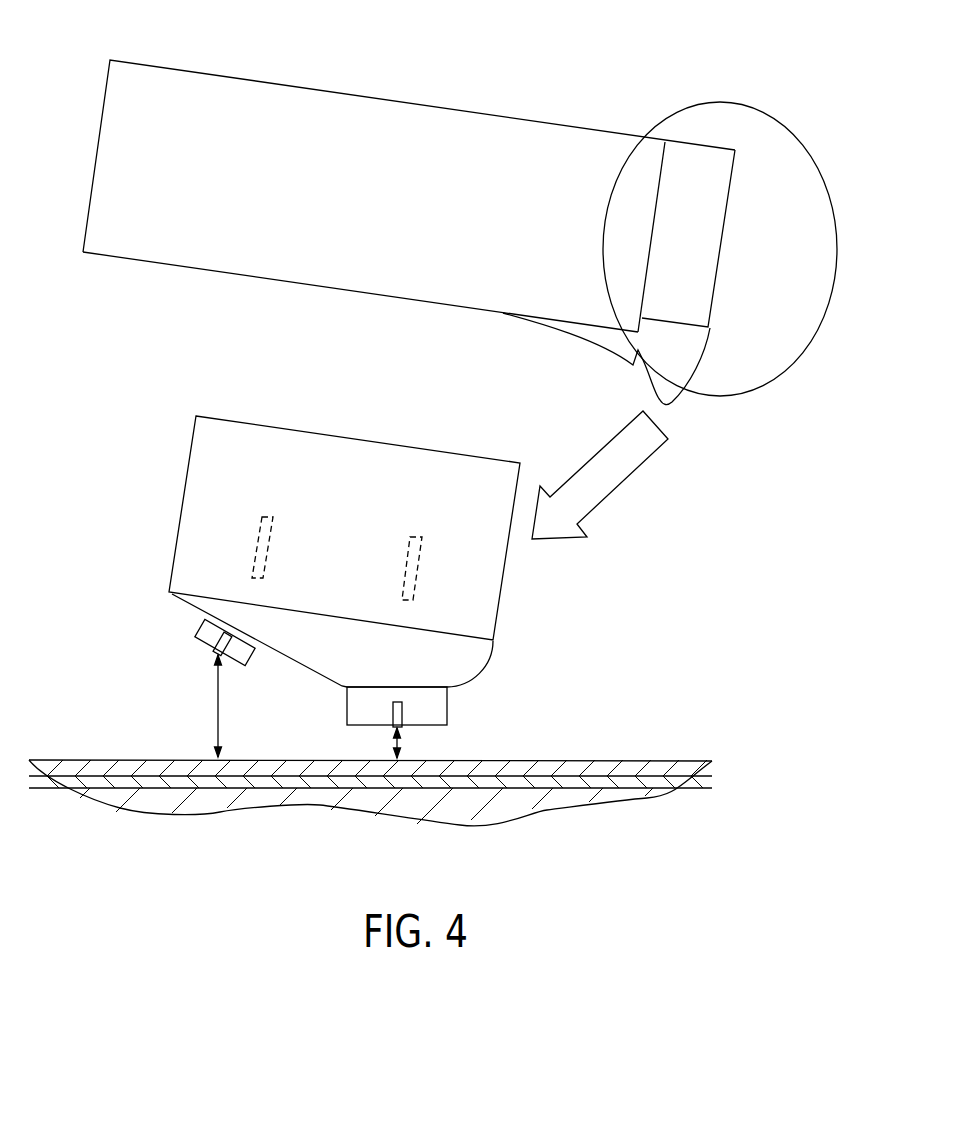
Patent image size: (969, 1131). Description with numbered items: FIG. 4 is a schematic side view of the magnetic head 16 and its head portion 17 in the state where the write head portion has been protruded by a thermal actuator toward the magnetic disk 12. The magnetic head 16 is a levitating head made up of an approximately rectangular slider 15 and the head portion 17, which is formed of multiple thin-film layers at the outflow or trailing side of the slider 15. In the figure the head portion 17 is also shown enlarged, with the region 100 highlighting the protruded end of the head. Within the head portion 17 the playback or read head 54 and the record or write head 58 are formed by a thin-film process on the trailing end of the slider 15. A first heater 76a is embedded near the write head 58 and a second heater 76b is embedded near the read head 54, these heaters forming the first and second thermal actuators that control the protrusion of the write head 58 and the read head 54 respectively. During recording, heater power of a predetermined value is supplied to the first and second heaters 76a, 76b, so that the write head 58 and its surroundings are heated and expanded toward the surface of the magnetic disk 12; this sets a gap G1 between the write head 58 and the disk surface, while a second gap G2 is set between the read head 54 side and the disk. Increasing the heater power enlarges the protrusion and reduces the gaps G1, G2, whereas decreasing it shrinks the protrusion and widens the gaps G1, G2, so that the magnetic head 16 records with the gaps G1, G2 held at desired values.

The magnetic disk 12 is at (600, 797).
The slider 15 is at (315, 287).
The magnetic head 16 is at (468, 87).
The head portion 17 is at (712, 238).
The playback head (read head) 54 is at (198, 642).
The record head (write head) 58 is at (448, 700).
The first heater 76a is at (423, 548).
The second heater 76b is at (272, 530).
The liquid ejecting head 100 is at (802, 135).
The gap G1 is at (402, 745).
The gap G2 is at (217, 715).